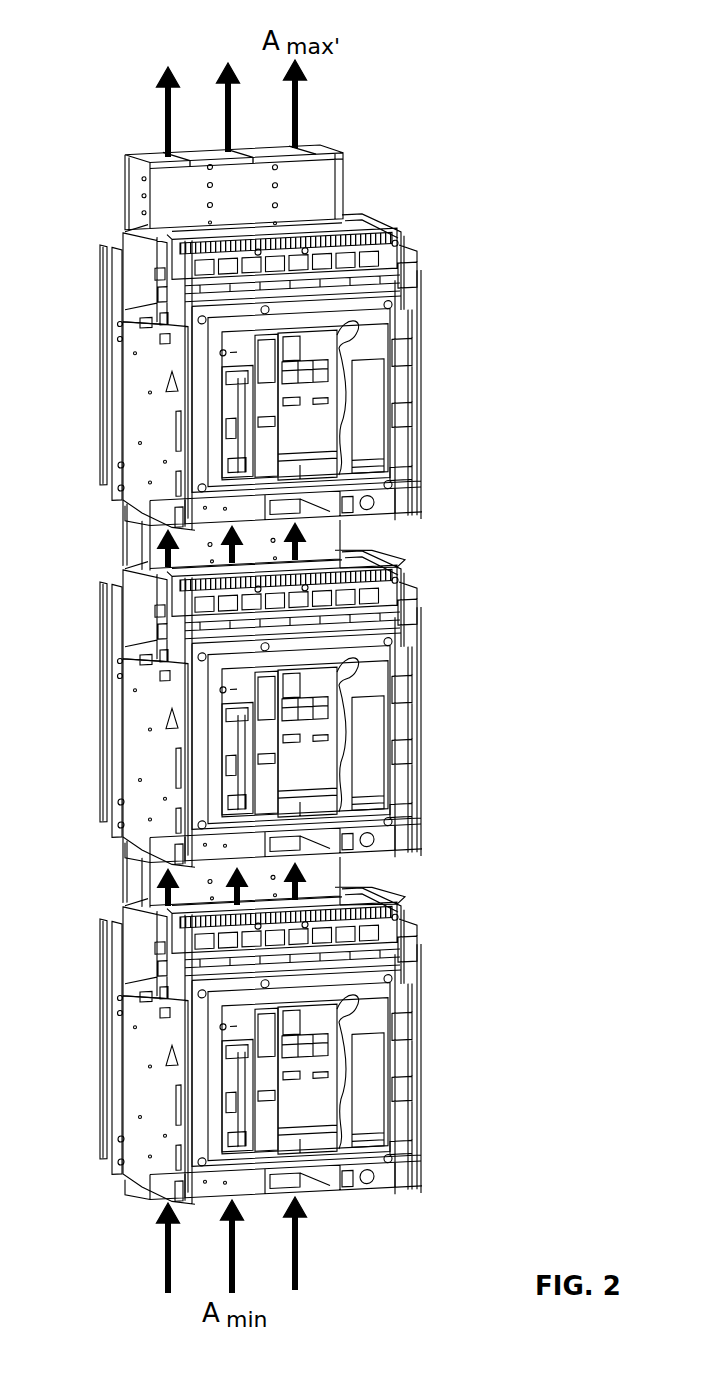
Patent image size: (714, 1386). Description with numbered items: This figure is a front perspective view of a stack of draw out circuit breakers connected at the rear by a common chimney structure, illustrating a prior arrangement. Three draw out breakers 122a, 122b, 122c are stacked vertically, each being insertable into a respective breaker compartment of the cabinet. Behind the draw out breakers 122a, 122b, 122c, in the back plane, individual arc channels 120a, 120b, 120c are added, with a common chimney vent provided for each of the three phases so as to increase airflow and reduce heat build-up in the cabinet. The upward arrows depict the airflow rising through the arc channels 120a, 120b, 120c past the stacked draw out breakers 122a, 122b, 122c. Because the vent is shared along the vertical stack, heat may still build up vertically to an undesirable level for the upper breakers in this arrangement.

The arc channel 120a is at (155, 145).
The arc channel 120b is at (215, 140).
The arc channel 120c is at (273, 140).
The draw out breaker 122a is at (412, 1037).
The draw out breaker 122b is at (412, 700).
The draw out breaker 122c is at (412, 363).